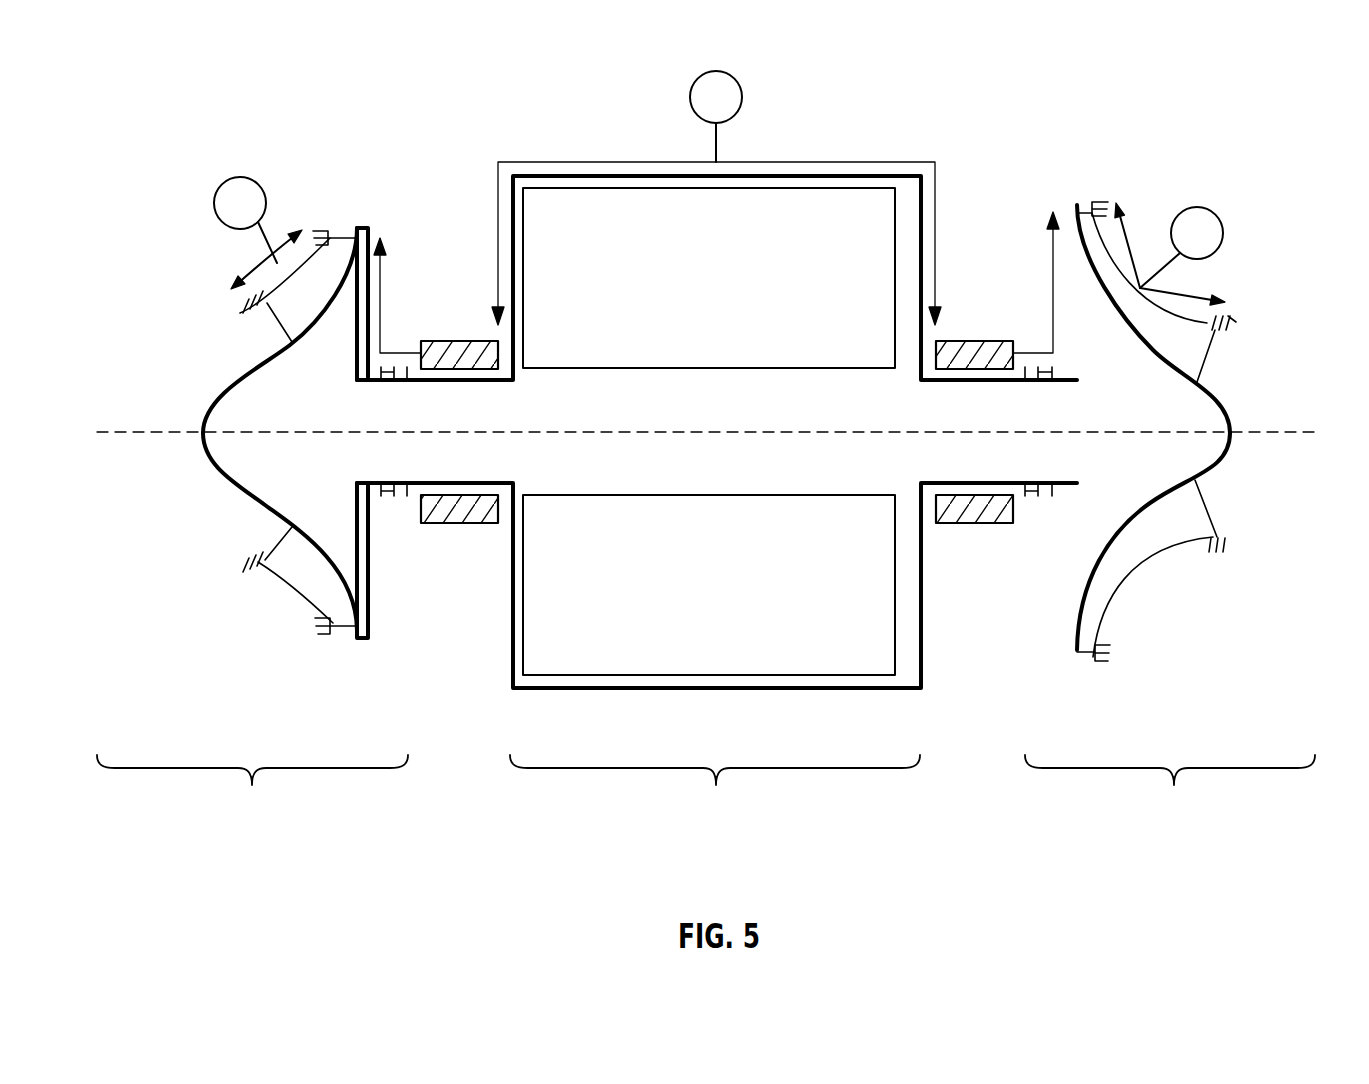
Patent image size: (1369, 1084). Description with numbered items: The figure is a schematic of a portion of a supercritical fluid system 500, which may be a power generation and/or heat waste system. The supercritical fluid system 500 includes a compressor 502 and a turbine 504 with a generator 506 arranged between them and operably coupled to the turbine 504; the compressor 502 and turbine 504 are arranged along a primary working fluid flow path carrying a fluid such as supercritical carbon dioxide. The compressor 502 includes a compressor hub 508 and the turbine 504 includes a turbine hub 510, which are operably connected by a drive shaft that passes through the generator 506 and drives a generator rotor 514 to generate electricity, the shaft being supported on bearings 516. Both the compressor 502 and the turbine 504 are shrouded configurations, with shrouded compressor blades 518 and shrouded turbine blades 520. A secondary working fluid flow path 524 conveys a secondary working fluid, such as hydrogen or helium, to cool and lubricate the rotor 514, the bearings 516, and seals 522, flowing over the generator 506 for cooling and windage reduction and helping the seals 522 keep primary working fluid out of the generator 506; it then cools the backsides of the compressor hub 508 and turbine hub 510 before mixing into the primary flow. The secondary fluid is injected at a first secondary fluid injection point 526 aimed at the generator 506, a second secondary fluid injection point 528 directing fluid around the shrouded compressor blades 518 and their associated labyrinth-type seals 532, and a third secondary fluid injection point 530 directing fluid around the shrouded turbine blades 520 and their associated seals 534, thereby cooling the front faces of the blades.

The supercritical fluid system 500 is at (157, 105).
The compressor 502 is at (252, 791).
The turbine 504 is at (1170, 791).
The generator 506 is at (717, 502).
The compressor hub 508 is at (232, 455).
The turbine hub 510 is at (1200, 450).
The generator rotor 514 is at (842, 643).
The bearings 516 is at (452, 351).
The shrouded compressor blades 518 is at (333, 253).
The shrouded turbine blades 520 is at (1180, 350).
The seals 522 is at (375, 381).
The secondary working fluid flow path 524 is at (937, 178).
The first secondary fluid injection point 526 is at (735, 74).
The second secondary fluid injection point 528 is at (222, 183).
The third secondary fluid injection point 530 is at (1218, 215).
The seals 532 is at (243, 553).
The seals 534 is at (1228, 321).